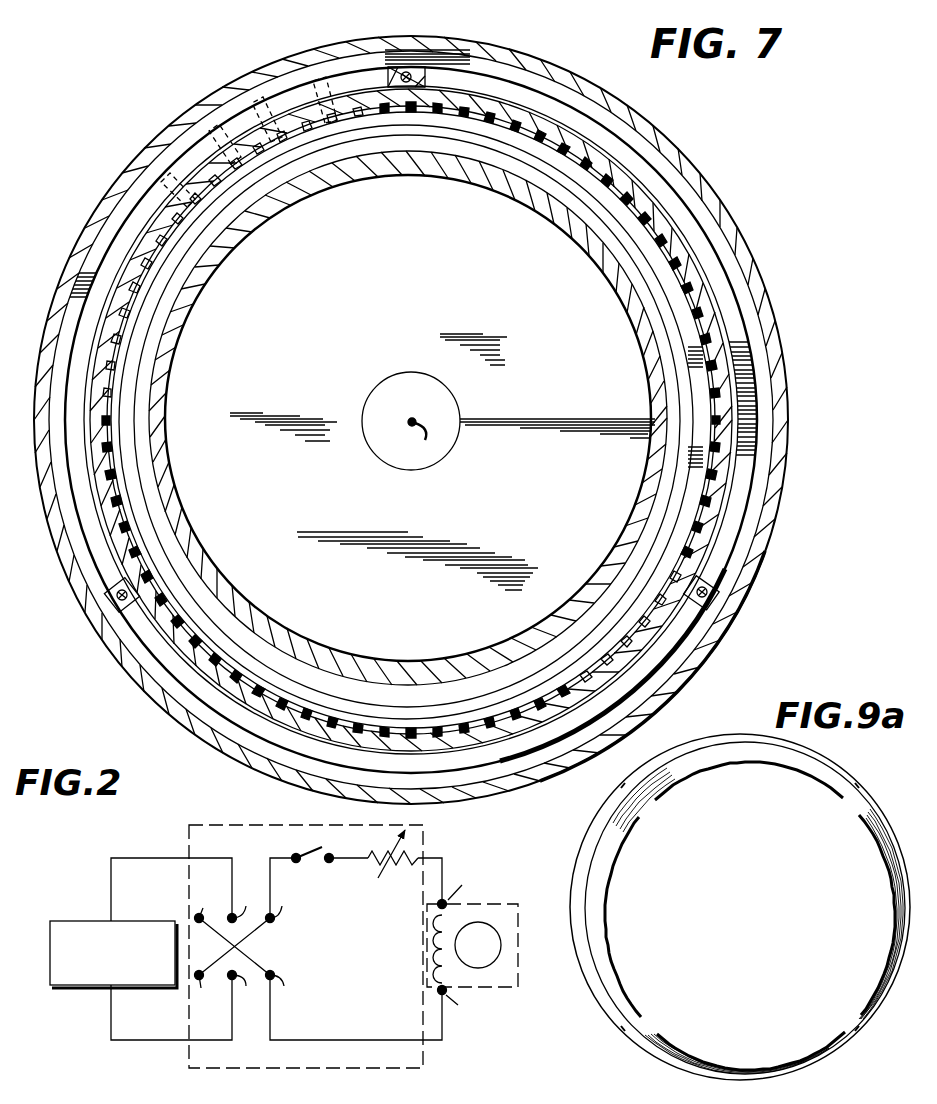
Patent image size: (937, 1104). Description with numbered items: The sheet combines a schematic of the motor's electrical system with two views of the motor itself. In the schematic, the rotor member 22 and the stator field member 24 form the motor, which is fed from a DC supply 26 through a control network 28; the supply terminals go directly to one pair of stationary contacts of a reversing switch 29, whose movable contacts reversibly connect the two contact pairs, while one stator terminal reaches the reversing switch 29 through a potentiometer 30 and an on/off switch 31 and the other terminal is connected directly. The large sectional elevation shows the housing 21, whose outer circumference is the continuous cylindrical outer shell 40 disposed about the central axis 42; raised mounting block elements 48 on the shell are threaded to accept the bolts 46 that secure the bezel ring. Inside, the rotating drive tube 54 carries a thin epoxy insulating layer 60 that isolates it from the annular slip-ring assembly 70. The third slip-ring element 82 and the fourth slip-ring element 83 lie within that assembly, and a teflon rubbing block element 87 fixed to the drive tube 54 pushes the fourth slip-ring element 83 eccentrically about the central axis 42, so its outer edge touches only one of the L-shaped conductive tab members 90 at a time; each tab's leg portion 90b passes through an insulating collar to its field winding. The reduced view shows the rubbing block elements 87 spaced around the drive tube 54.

In FIG. 7, the housing 21 is at (172, 126).
In FIG. 7, the cylindrical outer shell 40 is at (790, 430).
In FIG. 7, the third slip-ring element 82 is at (703, 405).
In FIG. 7, the drive tube 54 is at (290, 647).
In FIG. 9a, the drive tube 54 is at (820, 776).
In FIG. 7, the conductive tab members 90 is at (613, 200).
In FIG. 7, the leg portion 90b is at (318, 88).
In FIG. 7, the fourth slip-ring element 83 is at (148, 522).
In FIG. 7, the rubbing block elements 87 is at (148, 381).
In FIG. 9a, the rubbing block elements 87 is at (742, 740).
In FIG. 7, the slip-ring assembly 70 is at (150, 415).
In FIG. 7, the insulating layer 60 is at (372, 668).
In FIG. 7, the central axis 42 is at (508, 421).
In FIG. 7, the bolts 46 is at (408, 72).
In FIG. 7, the mounting block elements 48 is at (425, 78).
In FIG. 2, the rotor member 22 is at (493, 957).
In FIG. 2, the stator field member 24 is at (432, 970).
In FIG. 2, the DC supply 26 is at (72, 988).
In FIG. 2, the control network 28 is at (280, 1070).
In FIG. 2, the reversing switch 29 is at (288, 953).
In FIG. 2, the potentiometer 30 is at (382, 850).
In FIG. 2, the on/off switch 31 is at (306, 850).